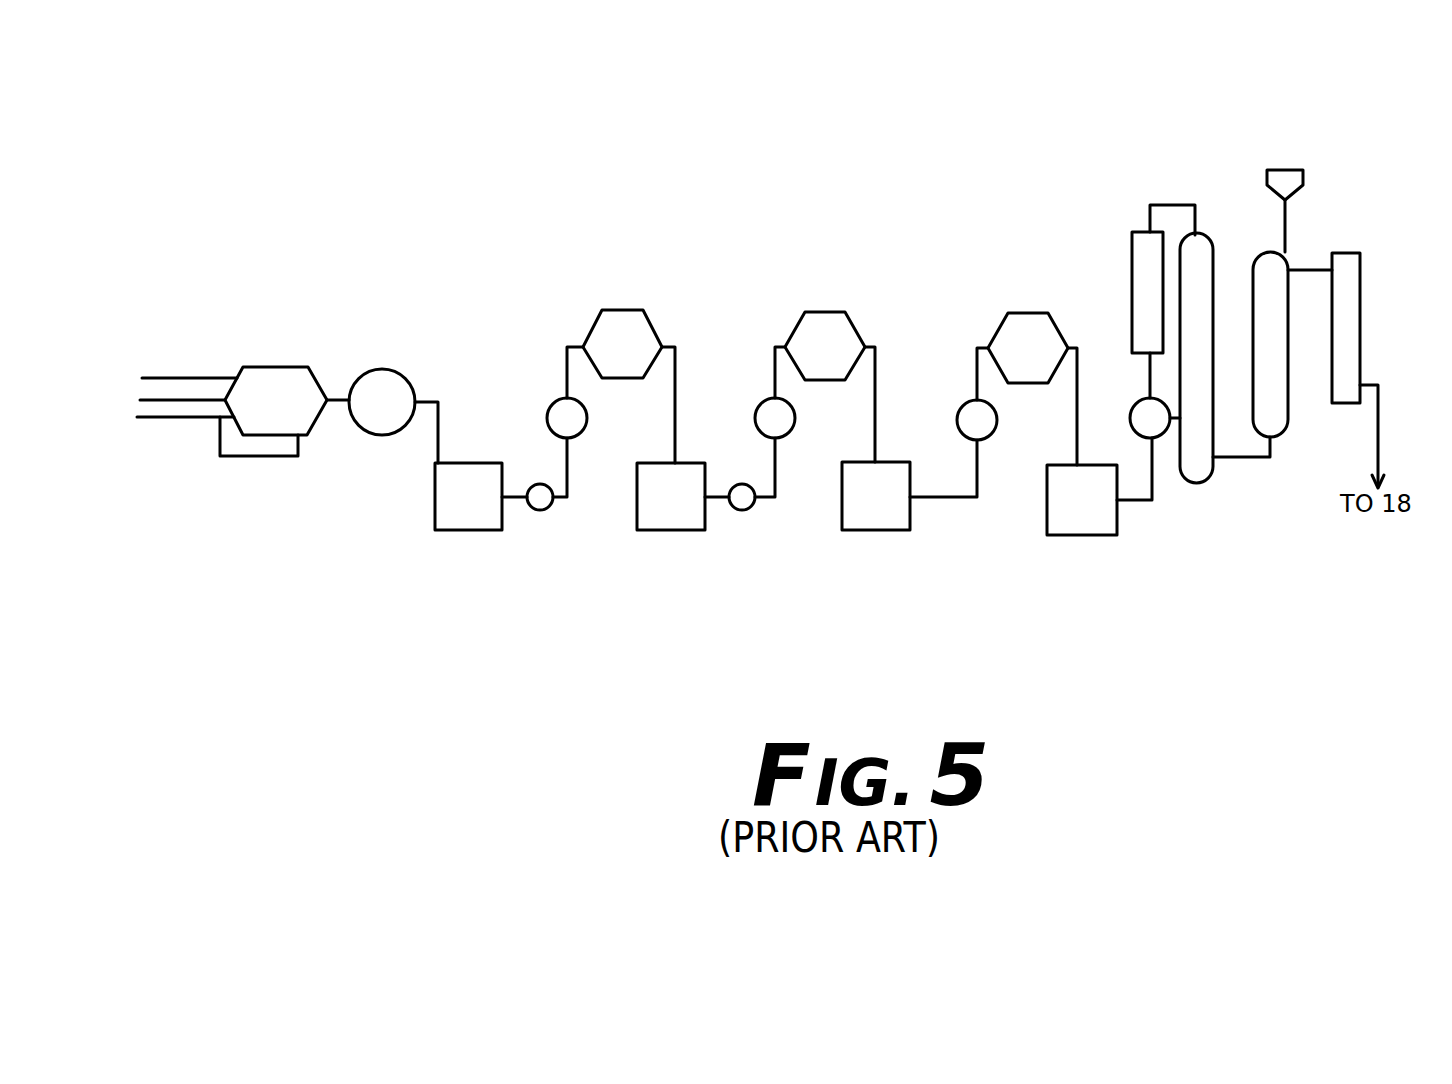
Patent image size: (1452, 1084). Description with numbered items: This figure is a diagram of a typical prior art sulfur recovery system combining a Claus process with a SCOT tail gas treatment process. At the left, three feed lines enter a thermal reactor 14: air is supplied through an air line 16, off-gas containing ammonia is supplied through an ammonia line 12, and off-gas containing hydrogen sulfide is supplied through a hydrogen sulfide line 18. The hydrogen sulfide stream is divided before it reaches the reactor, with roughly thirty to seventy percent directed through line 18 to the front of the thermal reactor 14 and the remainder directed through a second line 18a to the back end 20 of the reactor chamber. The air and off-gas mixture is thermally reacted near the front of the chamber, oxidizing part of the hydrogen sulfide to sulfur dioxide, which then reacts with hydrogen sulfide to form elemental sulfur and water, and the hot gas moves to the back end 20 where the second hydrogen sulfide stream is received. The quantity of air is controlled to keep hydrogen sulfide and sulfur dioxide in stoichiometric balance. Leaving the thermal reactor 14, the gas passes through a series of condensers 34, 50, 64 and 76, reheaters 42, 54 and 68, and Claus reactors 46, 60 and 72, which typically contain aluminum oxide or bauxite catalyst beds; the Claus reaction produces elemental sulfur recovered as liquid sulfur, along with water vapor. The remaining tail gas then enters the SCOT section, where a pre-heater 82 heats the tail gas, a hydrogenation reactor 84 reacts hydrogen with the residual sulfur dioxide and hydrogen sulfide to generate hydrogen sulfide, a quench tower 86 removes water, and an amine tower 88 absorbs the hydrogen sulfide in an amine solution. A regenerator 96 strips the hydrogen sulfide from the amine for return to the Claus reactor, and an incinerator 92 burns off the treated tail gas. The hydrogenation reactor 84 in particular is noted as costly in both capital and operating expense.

The ammonia line 12 is at (190, 396).
The thermal reactor 14 is at (290, 364).
The air line 16 is at (168, 378).
The hydrogen sulfide line 18 is at (203, 422).
The line 18a is at (282, 460).
The back end 20 is at (321, 373).
The condenser 34 is at (434, 520).
The reheater 42 is at (548, 404).
The Claus reactor 46 is at (621, 305).
The condenser 50 is at (638, 519).
The reheater 54 is at (752, 404).
The Claus reactor 60 is at (818, 310).
The condenser 64 is at (842, 515).
The reheater 68 is at (962, 406).
The Claus reactor 72 is at (1022, 313).
The condenser 76 is at (1047, 518).
The pre-heater 82 is at (1132, 408).
The hydrogenation reactor 84 is at (1127, 273).
The quench tower 86 is at (1215, 232).
The amine tower 88 is at (1314, 306).
The incinerator 92 is at (1305, 172).
The regenerator 96 is at (1360, 275).